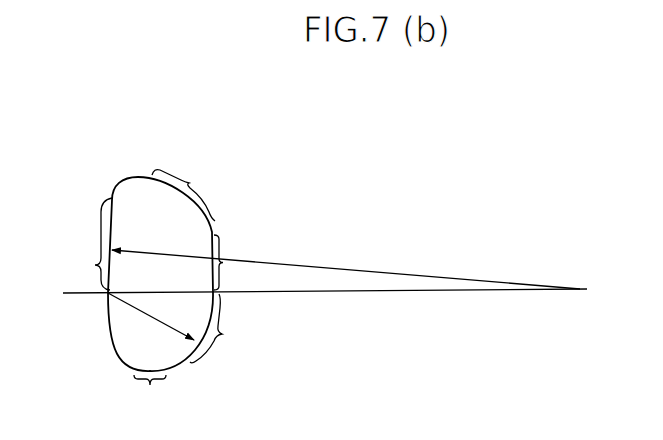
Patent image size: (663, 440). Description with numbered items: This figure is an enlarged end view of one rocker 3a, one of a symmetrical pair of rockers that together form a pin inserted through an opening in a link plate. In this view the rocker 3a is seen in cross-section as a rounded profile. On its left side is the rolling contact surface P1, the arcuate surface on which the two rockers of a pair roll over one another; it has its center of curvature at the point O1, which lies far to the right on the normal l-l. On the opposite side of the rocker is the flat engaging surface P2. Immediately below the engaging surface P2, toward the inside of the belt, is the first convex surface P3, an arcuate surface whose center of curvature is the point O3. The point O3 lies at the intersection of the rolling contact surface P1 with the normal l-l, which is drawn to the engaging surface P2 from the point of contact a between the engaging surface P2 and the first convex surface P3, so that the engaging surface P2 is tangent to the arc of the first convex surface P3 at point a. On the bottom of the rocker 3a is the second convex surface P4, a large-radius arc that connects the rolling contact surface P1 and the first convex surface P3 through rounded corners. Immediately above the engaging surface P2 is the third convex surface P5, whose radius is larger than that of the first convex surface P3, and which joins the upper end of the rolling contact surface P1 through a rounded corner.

The rocker 3a is at (119, 347).
The normal l is at (326, 310).
The center of curvature of rolling contact surface O1 is at (578, 288).
The center of curvature of first convex surface O3 is at (110, 292).
The point of contact a is at (223, 294).
The rolling contact surface P1 is at (89, 244).
The engaging surface P2 is at (236, 262).
The first convex surface P3 is at (219, 328).
The second convex surface P4 is at (150, 396).
The third convex surface P5 is at (183, 187).